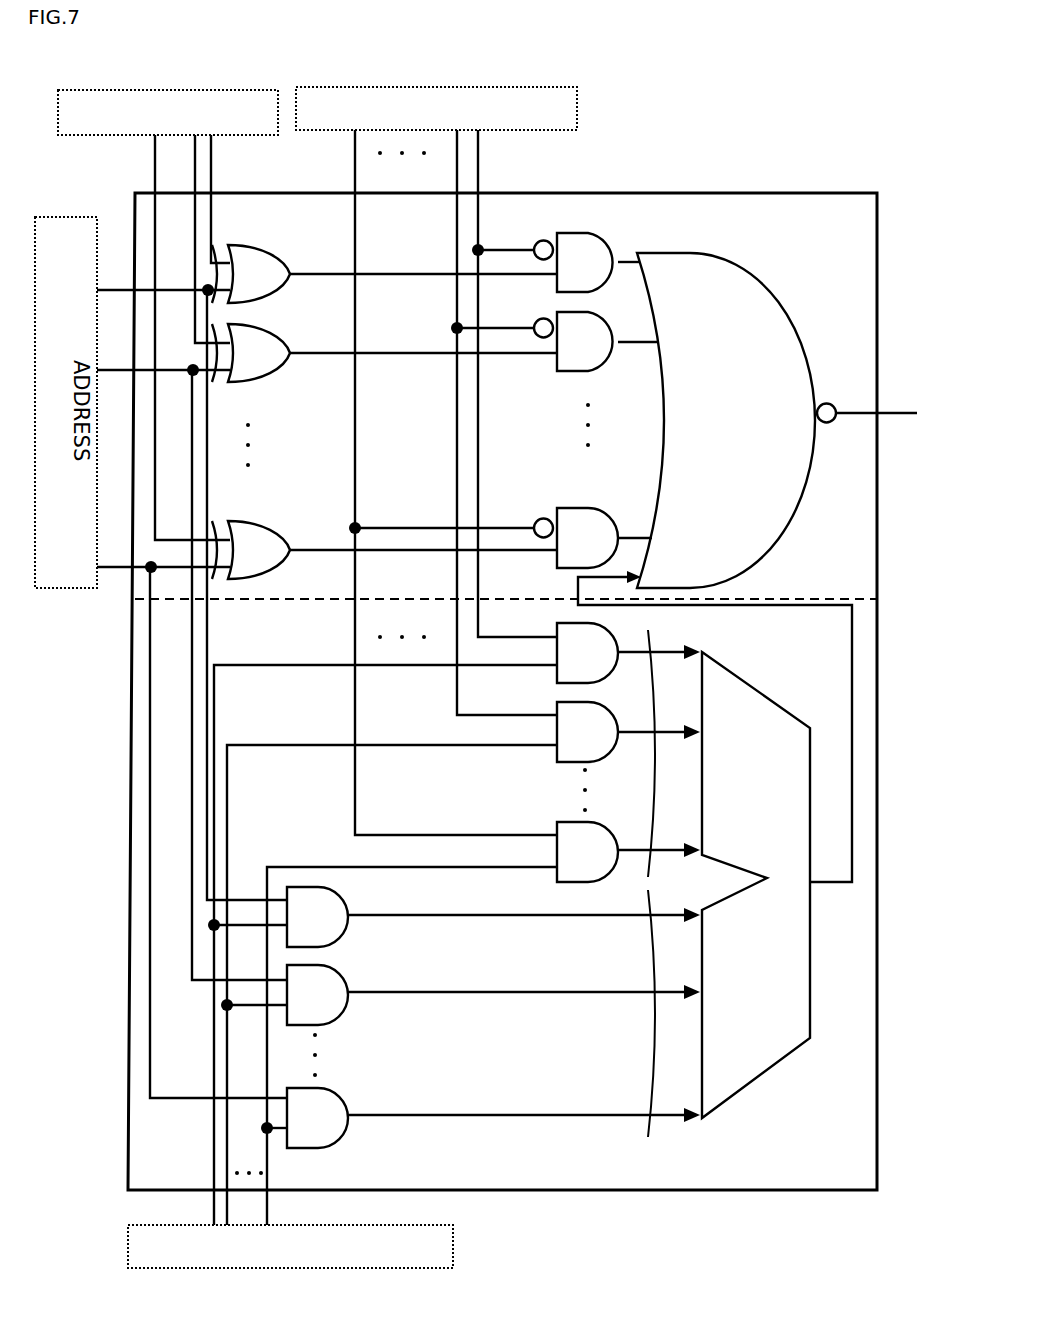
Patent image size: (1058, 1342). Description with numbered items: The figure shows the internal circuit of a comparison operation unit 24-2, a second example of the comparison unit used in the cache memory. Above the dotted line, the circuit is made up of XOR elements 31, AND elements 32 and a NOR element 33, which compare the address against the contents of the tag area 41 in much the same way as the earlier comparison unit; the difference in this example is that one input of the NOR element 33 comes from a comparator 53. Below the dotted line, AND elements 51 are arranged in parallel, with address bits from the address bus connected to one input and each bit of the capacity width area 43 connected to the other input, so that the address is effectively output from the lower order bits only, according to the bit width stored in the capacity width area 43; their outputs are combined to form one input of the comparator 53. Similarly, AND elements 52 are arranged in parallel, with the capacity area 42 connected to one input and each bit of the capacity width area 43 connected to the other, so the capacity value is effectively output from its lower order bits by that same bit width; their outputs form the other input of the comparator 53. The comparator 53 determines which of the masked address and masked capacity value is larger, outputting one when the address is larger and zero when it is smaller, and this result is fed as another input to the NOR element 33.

The comparison operation unit 24-2 is at (507, 650).
The XOR elements 31 is at (265, 412).
The AND elements 32 is at (597, 357).
The NOR element 33 is at (736, 411).
The tag area 41 is at (168, 70).
The capacity area 42 is at (442, 68).
The capacity width area 43 is at (332, 1261).
The AND elements 51 is at (345, 1017).
The AND elements 52 is at (549, 752).
The comparator 53 is at (761, 867).